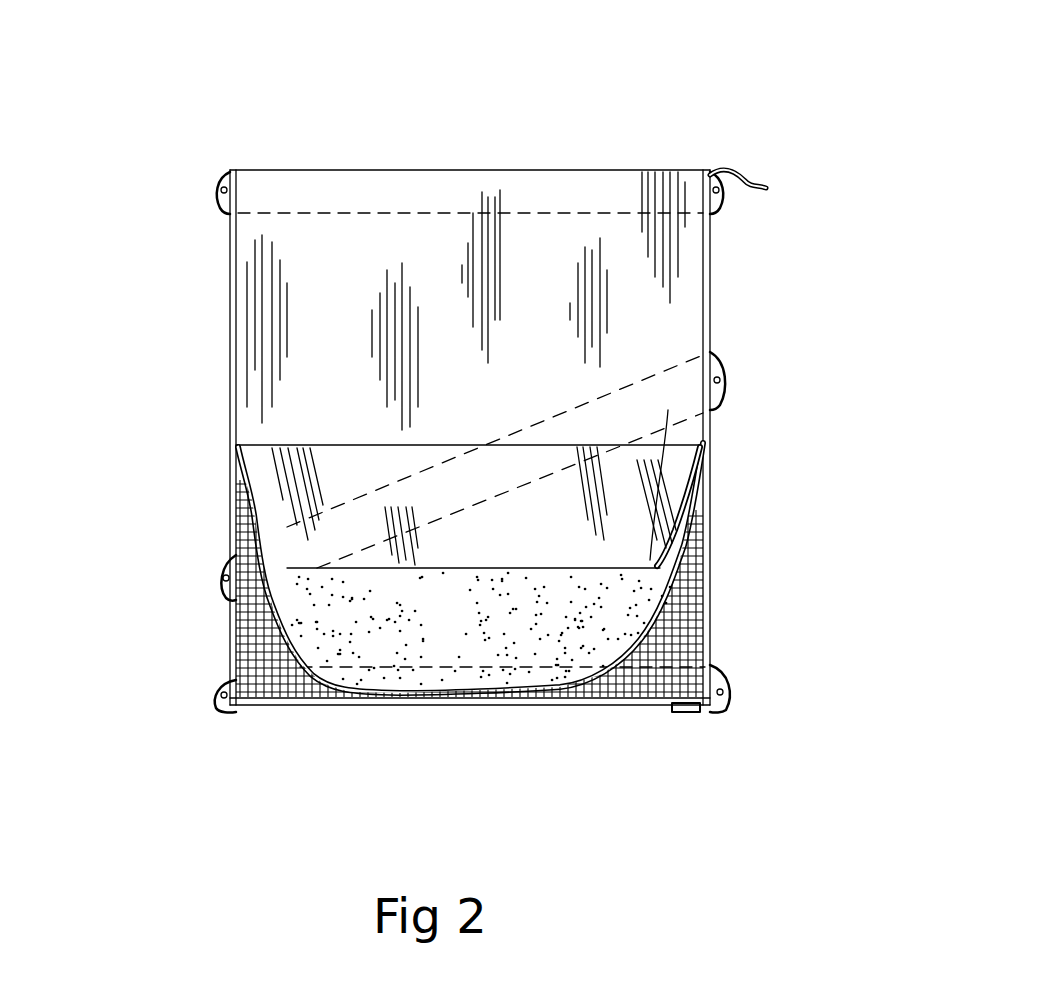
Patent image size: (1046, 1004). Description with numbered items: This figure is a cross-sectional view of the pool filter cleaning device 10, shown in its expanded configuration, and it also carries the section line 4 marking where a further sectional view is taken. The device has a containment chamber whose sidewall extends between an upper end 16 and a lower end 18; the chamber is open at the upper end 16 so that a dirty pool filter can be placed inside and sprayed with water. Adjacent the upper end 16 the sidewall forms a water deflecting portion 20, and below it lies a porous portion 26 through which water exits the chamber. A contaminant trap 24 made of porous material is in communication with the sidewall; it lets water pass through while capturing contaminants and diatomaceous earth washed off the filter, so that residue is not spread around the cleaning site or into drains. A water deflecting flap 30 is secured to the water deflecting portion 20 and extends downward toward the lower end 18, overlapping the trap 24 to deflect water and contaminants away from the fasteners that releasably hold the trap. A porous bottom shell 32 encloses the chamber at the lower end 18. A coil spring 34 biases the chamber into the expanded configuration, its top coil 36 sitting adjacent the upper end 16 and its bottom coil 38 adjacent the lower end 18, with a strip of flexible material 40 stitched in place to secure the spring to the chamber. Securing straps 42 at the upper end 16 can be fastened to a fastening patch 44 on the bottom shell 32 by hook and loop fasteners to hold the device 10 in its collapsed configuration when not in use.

The pool filter cleaning device 10 is at (682, 98).
The upper end 16 is at (290, 137).
The lower end 18 is at (322, 741).
The water deflecting portion 20 is at (347, 295).
The contaminant trap 24 is at (392, 640).
The porous portion 26 is at (265, 640).
The water deflecting flap 30 is at (485, 559).
The bottom shell 32 is at (615, 708).
The coil spring 34 is at (225, 575).
The top coil 36 is at (217, 183).
The bottom coil 38 is at (218, 687).
The strip of flexible material 40 is at (718, 400).
The securing straps 42 is at (748, 179).
The fastening patch 44 is at (690, 712).
The section line 4- 4 is at (668, 410).